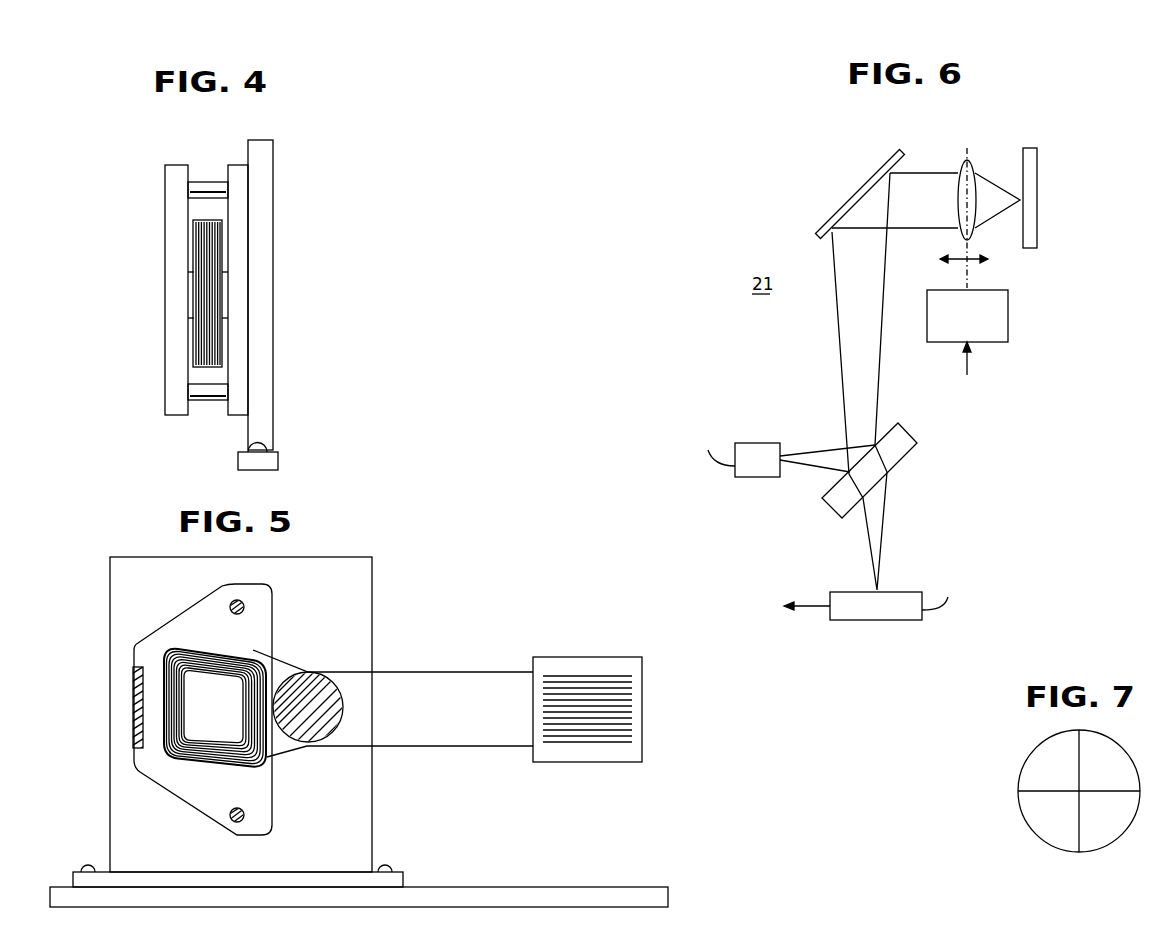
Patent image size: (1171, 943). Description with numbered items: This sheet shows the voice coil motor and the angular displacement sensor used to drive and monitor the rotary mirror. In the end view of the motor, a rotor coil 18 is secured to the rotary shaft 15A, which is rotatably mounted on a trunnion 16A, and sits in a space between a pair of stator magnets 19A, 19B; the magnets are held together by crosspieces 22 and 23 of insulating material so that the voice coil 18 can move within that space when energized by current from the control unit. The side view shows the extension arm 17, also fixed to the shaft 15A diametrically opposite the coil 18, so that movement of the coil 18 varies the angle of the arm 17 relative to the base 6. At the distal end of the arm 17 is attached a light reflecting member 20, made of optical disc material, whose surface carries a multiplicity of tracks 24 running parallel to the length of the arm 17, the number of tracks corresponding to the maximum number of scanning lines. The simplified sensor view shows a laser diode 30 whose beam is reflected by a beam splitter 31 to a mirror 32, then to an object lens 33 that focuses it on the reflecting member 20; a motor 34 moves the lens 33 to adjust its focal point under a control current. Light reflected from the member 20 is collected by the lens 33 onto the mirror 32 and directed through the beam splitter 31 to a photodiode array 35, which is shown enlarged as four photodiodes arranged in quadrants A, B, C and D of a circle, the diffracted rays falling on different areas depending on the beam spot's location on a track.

In FIG. 5, the base plate 6 is at (492, 887).
In FIG. 5, the rotary shaft 15A is at (312, 683).
In FIG. 4, the trunnion 16A is at (260, 182).
In FIG. 5, the trunnion 16A is at (373, 594).
In FIG. 5, the extension arm 17 is at (468, 748).
In FIG. 4, the rotor (voice) coil 18 is at (213, 320).
In FIG. 5, the rotor (voice) coil 18 is at (190, 648).
In FIG. 4, the stator magnet 19A is at (240, 268).
In FIG. 5, the stator magnet 19A is at (133, 657).
In FIG. 4, the stator magnet 19B is at (172, 268).
In FIG. 5, the light reflecting member 20 is at (613, 763).
In FIG. 6, the light reflecting member 20 is at (1030, 148).
In FIG. 4, the crosspiece 22 is at (205, 182).
In FIG. 5, the crosspiece 22 is at (231, 611).
In FIG. 5, the crosspiece 23 is at (133, 712).
In FIG. 5, the tracks 24 is at (572, 739).
In FIG. 6, the laser diode 30 is at (757, 478).
In FIG. 6, the beam splitter 31 is at (838, 509).
In FIG. 6, the mirror 32 is at (858, 197).
In FIG. 6, the object lens 33 is at (960, 176).
In FIG. 6, the motor 34 is at (1008, 306).
In FIG. 6, the photodiode array 35 is at (872, 621).
In FIG. 7, the photodiode array 35 is at (1133, 761).